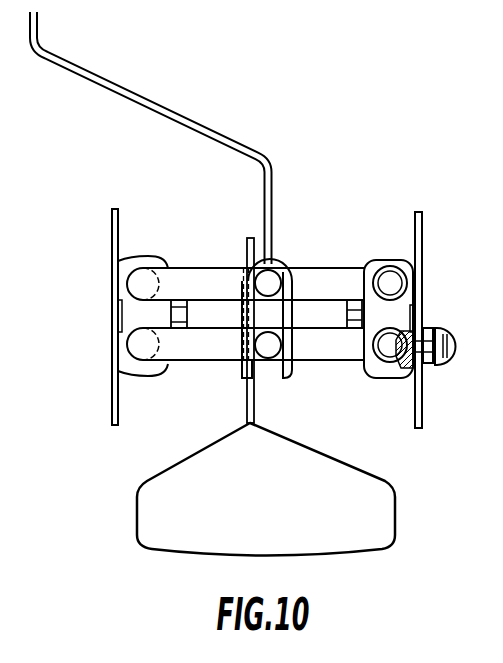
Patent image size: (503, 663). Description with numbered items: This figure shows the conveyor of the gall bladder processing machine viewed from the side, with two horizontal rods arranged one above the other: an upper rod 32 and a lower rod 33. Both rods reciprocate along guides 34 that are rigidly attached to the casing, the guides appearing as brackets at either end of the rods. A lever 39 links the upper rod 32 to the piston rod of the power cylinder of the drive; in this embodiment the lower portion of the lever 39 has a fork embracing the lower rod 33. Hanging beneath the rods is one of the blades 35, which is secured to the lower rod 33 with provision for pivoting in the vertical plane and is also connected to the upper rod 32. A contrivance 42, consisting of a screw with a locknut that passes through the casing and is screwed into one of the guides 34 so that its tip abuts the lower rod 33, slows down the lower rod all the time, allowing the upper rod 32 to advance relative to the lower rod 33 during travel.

The upper rod 32 is at (317, 280).
The lower rod 33 is at (328, 352).
The guides 34 is at (140, 263).
The blades 35 is at (380, 520).
The lever 39 is at (213, 132).
The contrivance 42 is at (443, 332).